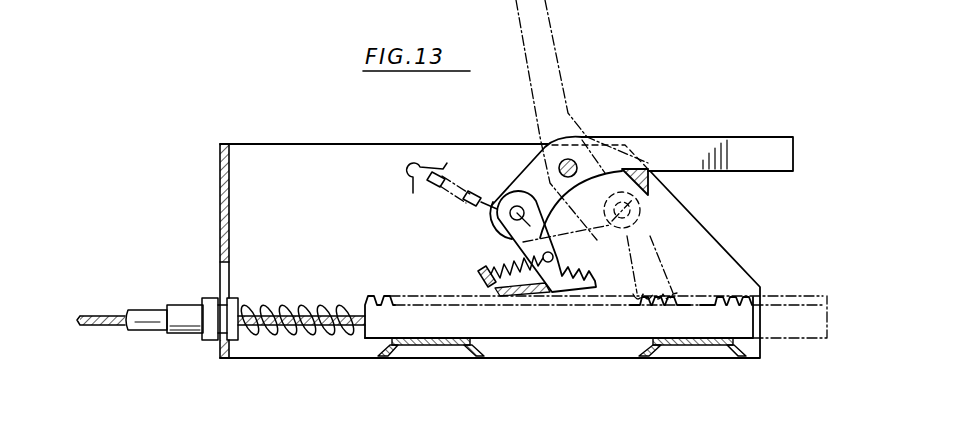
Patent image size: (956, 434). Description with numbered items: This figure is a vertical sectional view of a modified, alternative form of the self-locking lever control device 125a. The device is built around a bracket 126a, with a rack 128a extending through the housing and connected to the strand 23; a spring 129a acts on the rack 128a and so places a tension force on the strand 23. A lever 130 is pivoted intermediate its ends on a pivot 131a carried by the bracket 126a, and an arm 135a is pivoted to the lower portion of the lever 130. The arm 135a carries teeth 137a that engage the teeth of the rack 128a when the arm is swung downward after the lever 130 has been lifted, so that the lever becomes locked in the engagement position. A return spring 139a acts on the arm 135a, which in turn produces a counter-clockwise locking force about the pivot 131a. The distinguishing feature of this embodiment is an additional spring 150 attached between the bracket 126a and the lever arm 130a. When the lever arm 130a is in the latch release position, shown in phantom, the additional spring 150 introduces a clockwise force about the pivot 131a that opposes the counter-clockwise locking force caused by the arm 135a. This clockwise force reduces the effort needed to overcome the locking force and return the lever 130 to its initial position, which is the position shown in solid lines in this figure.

The self-locking lever control device 125a is at (316, 141).
The bracket 126a is at (238, 224).
The strand 23 is at (107, 322).
The spring 129a is at (262, 303).
The rack 128a is at (532, 323).
The teeth 137a is at (520, 185).
The arm 135a is at (577, 247).
The return spring 139a is at (510, 260).
The additional spring 150 is at (430, 183).
The pivot 131a is at (576, 162).
The lever arm 130a is at (523, 172).
The lever 130 is at (730, 148).